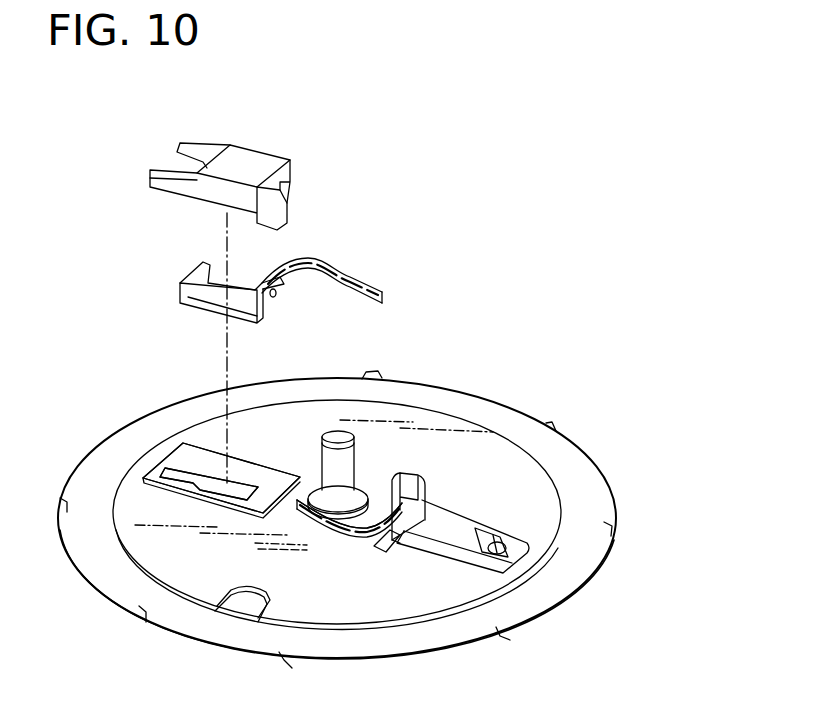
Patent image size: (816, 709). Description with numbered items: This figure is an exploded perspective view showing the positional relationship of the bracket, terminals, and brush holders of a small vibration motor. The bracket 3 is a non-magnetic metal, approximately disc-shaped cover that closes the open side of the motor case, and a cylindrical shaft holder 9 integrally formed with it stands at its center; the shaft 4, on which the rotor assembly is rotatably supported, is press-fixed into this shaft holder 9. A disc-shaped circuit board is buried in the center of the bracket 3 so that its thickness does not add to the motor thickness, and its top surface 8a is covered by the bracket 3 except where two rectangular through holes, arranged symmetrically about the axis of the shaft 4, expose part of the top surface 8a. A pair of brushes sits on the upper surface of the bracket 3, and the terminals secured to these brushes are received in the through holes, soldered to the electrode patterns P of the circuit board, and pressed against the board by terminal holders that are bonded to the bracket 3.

The bracket 3 is at (368, 519).
The top surface of the circuit board 8a is at (273, 492).
The electrode patterns P is at (207, 482).
The shaft 4 is at (343, 447).
The shaft holder 9 is at (360, 513).